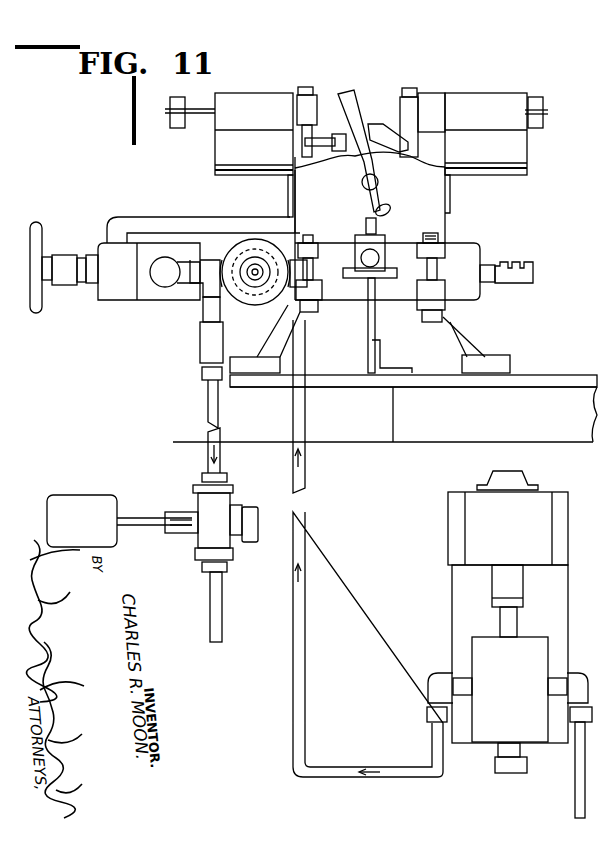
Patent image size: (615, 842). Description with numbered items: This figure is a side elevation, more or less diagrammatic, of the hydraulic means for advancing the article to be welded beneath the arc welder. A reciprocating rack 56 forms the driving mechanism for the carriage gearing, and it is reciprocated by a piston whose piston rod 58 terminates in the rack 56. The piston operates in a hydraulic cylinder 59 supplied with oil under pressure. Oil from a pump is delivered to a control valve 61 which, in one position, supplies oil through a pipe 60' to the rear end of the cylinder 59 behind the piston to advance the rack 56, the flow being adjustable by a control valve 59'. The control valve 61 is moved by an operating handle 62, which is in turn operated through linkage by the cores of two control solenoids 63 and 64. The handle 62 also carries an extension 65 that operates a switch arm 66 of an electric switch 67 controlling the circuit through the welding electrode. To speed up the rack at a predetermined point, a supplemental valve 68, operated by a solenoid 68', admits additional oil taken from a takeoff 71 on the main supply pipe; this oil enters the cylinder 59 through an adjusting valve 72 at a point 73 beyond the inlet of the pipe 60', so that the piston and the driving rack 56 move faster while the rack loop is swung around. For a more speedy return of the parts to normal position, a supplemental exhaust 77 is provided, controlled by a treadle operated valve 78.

The reciprocating rack 56 is at (520, 262).
The piston rod 58 is at (488, 264).
The hydraulic cylinder 59 is at (149, 293).
The control valve 59' is at (64, 278).
The pipe 60' is at (203, 206).
The control valve 61 is at (433, 196).
The operating handle 62 is at (349, 103).
The control solenoid 63 is at (483, 134).
The control solenoid 64 is at (229, 155).
The extension 65 is at (392, 207).
The switch arm 66 is at (364, 226).
The electric switch 67 is at (358, 252).
The supplemental valve 68 is at (497, 669).
The solenoid 68' is at (508, 554).
The takeoff 71 is at (585, 787).
The adjusting valve 72 is at (255, 283).
The point 73 is at (163, 257).
The supplemental exhaust 77 is at (208, 428).
The treadle operated valve 78 is at (213, 508).